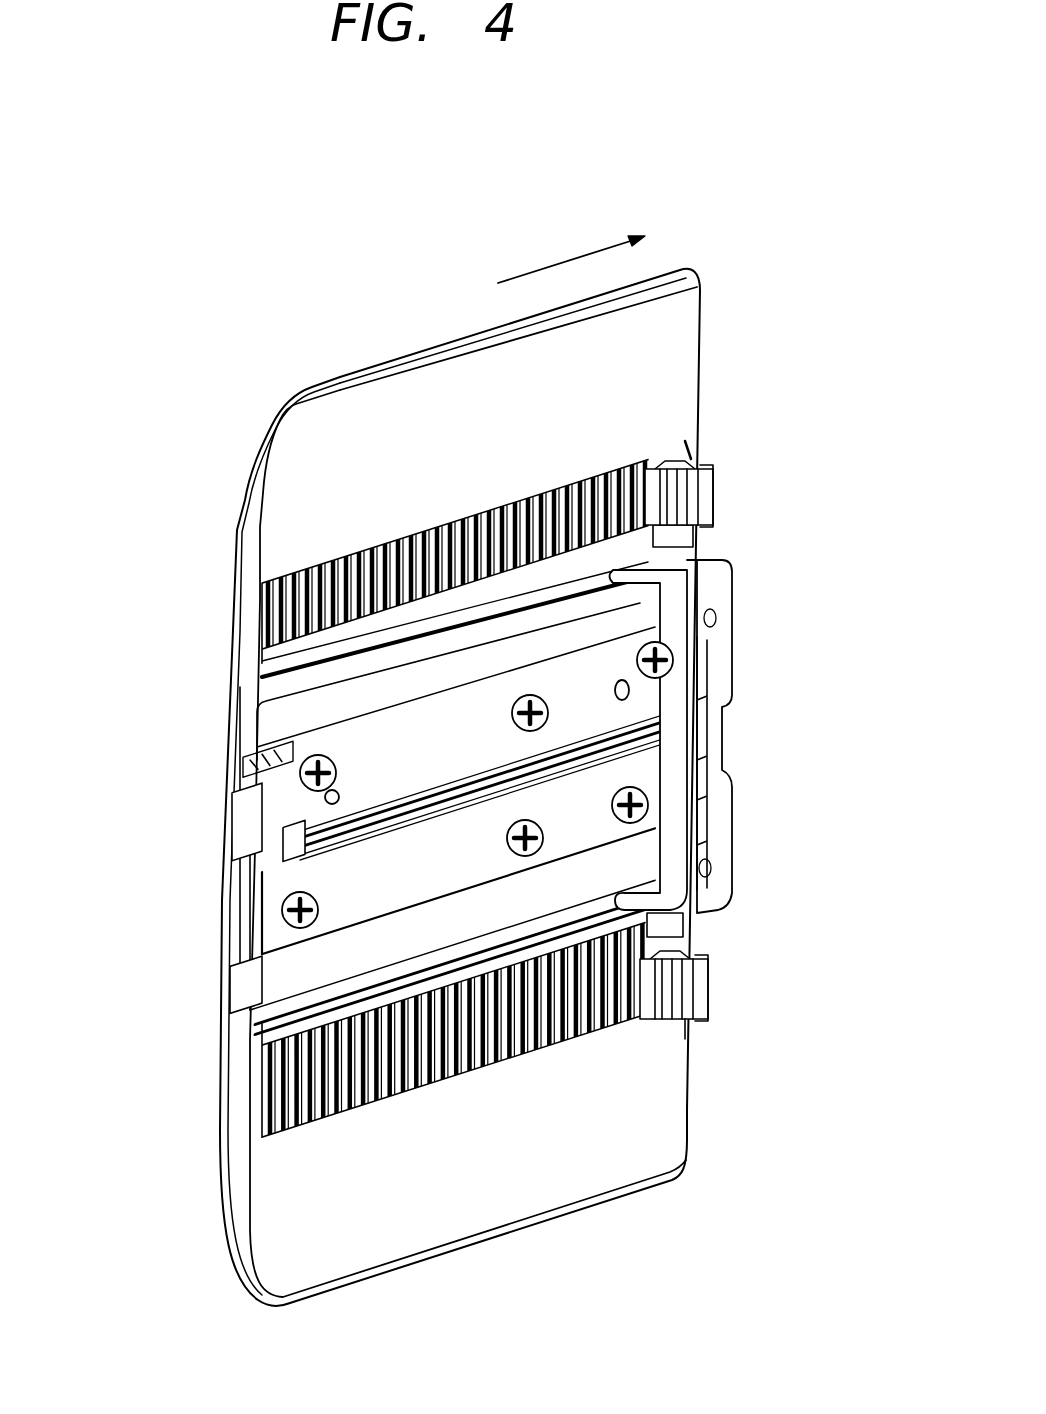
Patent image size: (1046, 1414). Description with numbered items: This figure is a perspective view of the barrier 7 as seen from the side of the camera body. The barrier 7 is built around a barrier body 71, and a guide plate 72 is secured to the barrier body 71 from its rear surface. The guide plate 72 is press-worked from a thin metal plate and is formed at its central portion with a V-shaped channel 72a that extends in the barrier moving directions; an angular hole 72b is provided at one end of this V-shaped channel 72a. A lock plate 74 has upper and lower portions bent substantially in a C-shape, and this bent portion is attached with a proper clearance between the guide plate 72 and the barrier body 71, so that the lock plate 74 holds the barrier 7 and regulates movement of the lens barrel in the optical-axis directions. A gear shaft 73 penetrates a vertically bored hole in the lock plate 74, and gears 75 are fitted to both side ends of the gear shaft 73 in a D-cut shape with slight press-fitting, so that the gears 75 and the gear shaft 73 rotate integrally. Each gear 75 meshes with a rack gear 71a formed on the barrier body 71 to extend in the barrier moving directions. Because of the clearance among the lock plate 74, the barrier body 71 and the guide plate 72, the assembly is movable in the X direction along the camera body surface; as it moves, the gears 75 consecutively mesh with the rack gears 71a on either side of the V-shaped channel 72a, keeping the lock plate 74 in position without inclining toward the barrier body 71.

The barrier 7 is at (652, 187).
The barrier body 71 is at (438, 397).
The rack gear 71a is at (272, 624).
The guide plate 72 is at (310, 717).
The V-shaped channel 72a is at (437, 823).
The angular hole 72b is at (285, 866).
The gear shaft 73 is at (670, 673).
The lock plate 74 is at (718, 820).
The gear 75 is at (715, 487).